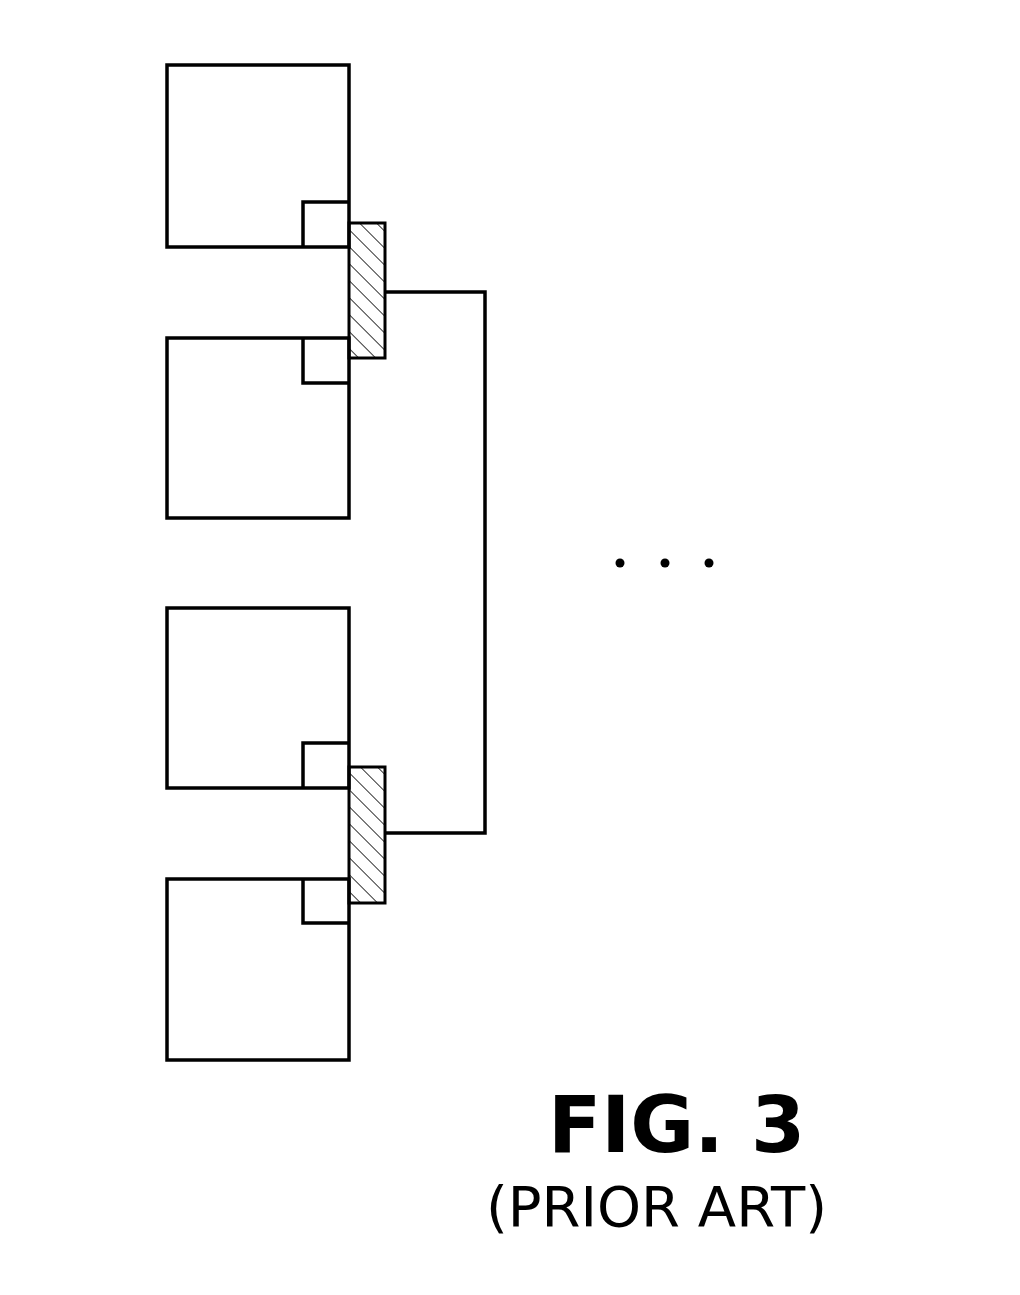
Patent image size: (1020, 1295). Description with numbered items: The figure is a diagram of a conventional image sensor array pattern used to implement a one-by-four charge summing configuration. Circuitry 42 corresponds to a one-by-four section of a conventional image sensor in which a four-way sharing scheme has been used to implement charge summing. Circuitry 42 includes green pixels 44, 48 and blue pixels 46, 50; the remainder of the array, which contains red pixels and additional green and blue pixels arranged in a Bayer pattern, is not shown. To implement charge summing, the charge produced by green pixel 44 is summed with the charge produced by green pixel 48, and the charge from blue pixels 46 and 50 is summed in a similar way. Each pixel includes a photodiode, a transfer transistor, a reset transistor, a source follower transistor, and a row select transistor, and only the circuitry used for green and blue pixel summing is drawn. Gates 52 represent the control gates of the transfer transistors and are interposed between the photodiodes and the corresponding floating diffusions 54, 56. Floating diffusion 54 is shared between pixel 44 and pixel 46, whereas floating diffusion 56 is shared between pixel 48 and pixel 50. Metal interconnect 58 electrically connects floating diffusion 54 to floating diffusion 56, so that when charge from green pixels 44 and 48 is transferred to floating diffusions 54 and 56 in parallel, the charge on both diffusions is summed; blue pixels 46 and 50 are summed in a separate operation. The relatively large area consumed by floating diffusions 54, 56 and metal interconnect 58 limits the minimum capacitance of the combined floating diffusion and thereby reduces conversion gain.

The circuitry 42 is at (630, 50).
The green pixel 44 is at (177, 147).
The blue pixel 46 is at (177, 419).
The green pixel 48 is at (177, 690).
The blue pixel 50 is at (177, 961).
The gates 52 is at (322, 238).
The floating diffusion 54 is at (376, 258).
The floating diffusion 56 is at (378, 870).
The metal interconnect 58 is at (487, 443).